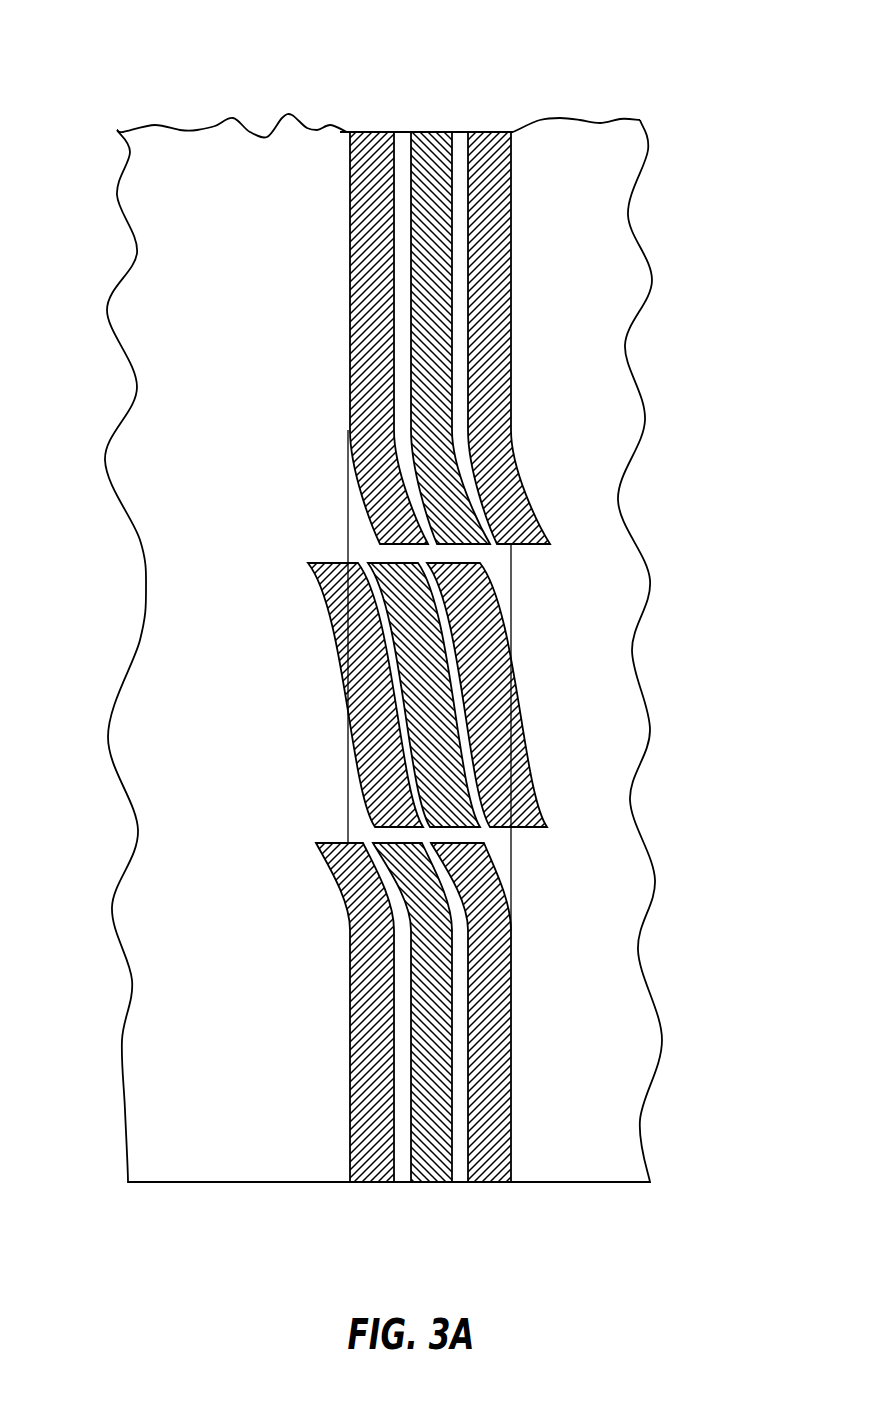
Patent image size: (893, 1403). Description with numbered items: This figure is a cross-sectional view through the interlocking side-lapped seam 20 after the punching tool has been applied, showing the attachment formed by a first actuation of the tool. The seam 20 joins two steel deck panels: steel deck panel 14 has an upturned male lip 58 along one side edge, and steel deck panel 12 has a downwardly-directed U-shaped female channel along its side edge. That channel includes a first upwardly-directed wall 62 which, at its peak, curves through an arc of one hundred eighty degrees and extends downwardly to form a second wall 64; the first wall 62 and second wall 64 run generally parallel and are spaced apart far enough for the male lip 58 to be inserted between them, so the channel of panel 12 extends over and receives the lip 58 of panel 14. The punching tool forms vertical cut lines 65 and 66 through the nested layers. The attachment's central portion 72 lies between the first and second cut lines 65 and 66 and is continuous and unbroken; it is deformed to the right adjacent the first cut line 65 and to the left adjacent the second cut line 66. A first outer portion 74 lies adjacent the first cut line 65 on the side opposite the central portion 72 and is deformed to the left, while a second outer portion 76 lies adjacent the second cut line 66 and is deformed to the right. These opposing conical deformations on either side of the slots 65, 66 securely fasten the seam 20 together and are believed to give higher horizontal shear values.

The steel deck panel 12 is at (131, 1126).
The steel deck panel 14 is at (627, 1110).
The side-lapped seam 20 is at (434, 95).
The upturned male lip 58 is at (432, 1186).
The first upwardly-directed wall 62 is at (378, 1186).
The second wall 64 is at (490, 1186).
The first cut line 65 is at (349, 820).
The second cut line 66 is at (349, 538).
The central portion 72 is at (532, 692).
The first outer portion 74 is at (512, 876).
The second outer portion 76 is at (537, 492).